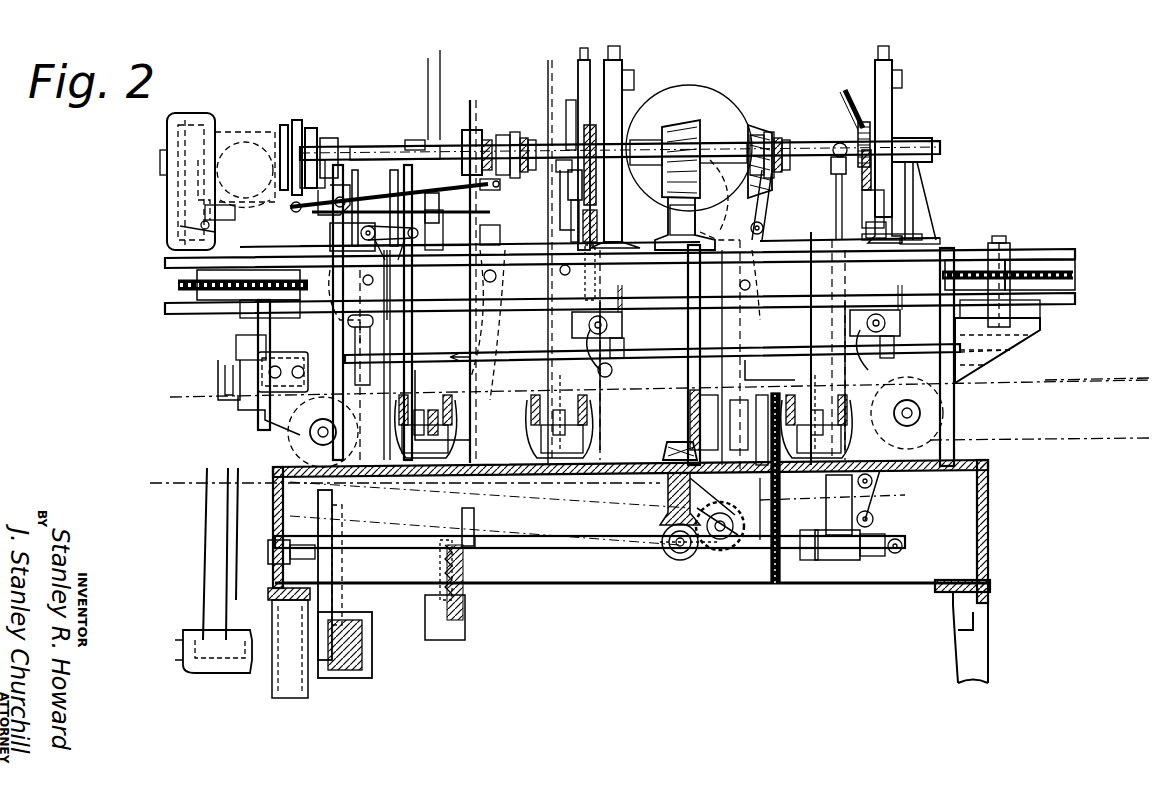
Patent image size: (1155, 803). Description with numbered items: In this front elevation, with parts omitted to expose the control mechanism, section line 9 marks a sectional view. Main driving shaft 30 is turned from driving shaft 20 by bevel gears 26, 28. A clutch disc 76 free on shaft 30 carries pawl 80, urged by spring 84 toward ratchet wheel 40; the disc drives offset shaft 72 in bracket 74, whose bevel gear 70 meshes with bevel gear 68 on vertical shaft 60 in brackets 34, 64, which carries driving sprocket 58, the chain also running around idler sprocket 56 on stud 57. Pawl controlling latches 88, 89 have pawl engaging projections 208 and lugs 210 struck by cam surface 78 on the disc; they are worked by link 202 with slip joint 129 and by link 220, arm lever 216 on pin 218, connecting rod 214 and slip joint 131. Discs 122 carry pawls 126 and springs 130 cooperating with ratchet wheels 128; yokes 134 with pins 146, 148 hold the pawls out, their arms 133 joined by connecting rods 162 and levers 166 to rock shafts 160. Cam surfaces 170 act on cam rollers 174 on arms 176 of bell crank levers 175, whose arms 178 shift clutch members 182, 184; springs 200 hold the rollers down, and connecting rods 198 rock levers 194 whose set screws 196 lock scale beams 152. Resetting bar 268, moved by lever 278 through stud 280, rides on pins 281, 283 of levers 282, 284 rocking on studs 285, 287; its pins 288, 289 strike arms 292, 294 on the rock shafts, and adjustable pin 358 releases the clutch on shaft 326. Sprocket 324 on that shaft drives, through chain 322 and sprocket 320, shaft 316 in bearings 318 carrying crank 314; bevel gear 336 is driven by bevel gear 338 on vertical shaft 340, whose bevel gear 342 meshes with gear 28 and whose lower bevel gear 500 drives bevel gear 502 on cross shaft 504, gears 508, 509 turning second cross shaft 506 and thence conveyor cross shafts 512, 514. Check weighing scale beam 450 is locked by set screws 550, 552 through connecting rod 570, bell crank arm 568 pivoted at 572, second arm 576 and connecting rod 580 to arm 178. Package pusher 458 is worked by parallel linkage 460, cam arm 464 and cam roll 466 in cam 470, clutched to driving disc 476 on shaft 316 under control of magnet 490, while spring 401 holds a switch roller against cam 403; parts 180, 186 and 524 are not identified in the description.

The section line 9- 9 is at (387, 110).
The bevel gear 20 is at (672, 128).
The bevel gear 26 is at (740, 128).
The gear housing circle 28 is at (740, 125).
The shaft support 30 is at (415, 140).
The column bracket 34 is at (255, 320).
The pulley 40 is at (326, 138).
The rack 56 is at (1040, 266).
The rack post 57 is at (1000, 238).
The rack 58 is at (175, 287).
The bracket 60 is at (236, 345).
The bracket arm 64 is at (238, 405).
The drum 68 is at (235, 165).
The hub 70 is at (262, 135).
The clutch 72 is at (255, 160).
The pulley flange 74 is at (284, 125).
The pulley flange 76 is at (311, 128).
The pulley flange 78 is at (297, 120).
The lever 80 is at (330, 190).
The bearing 84 is at (310, 160).
The pin 88 is at (200, 226).
The link 89 is at (167, 245).
The column 122 is at (604, 80).
The arm 126 is at (568, 190).
The gear 128 is at (571, 100).
The sprocket 129 is at (466, 130).
The bracket 130 is at (905, 140).
The sprocket 131 is at (483, 140).
The pin 133 is at (572, 165).
The column 134 is at (582, 130).
The gear 146 is at (584, 150).
The rod 148 is at (573, 205).
The carrier 152 is at (463, 447).
The block 160 is at (622, 325).
The pivot 162 is at (886, 225).
The lever 166 is at (590, 345).
The strut 170 is at (918, 178).
The spring 174 is at (914, 205).
The support 175 is at (698, 236).
The rod 176 is at (495, 325).
The arm 178 is at (562, 190).
The clutch disc 180 is at (522, 138).
The clutch disc 182 is at (530, 142).
The clutch member 184 is at (500, 135).
The clutch member 186 is at (512, 132).
The guide post 194 is at (588, 398).
The rod 196 is at (565, 390).
The rod 198 is at (570, 330).
The plate 200 is at (922, 238).
The rod 202 is at (440, 50).
The link 208 is at (340, 205).
The block 210 is at (205, 212).
The rod 214 is at (430, 50).
The link 216 is at (470, 317).
The pivot block 218 is at (482, 247).
The link 220 is at (702, 286).
The carrier 268 is at (455, 402).
The link 278 is at (354, 307).
The lever 280 is at (350, 370).
The pin 281 is at (347, 279).
The bracket 282 is at (258, 366).
The bracket 283 is at (1035, 340).
The center line 284 is at (1080, 356).
The pulley 285 is at (300, 425).
The guide 287 is at (1005, 362).
The pivot 288 is at (612, 372).
The pulley 289 is at (925, 400).
The guide post 292 is at (548, 370).
The block 294 is at (894, 345).
The coupling 314 is at (900, 532).
The shaft 316 is at (575, 560).
The link 318 is at (872, 500).
The bearing 320 is at (780, 565).
The pulley 322 is at (780, 518).
The bracket 324 is at (826, 500).
The chain 326 is at (772, 395).
The post 336 is at (690, 430).
The base 338 is at (667, 450).
The link 340 is at (624, 345).
The arc 342 is at (708, 200).
The arm 358 is at (750, 370).
The spring unit 401 is at (440, 598).
The plate 403 is at (474, 512).
The lever 450 is at (418, 400).
The bracket 458 is at (218, 385).
The bar 460 is at (205, 498).
The foot 464 is at (290, 578).
The nut 466 is at (268, 548).
The post 470 is at (318, 500).
The shaft 476 is at (340, 528).
The housing 490 is at (372, 660).
The post 500 is at (662, 524).
The belt 502 is at (676, 560).
The pulley 504 is at (670, 555).
The sprocket 506 is at (715, 550).
The shaft 508 is at (670, 565).
The rod 509 is at (760, 509).
The pulley 512 is at (917, 413).
The pulley 514 is at (305, 445).
The rod 524 is at (382, 285).
The guide 550 is at (455, 417).
The guide 552 is at (455, 428).
The bar 568 is at (392, 235).
The direction arrow 570 is at (444, 354).
The housing 572 is at (330, 241).
The shaft 576 is at (395, 156).
The bar 580 is at (401, 220).